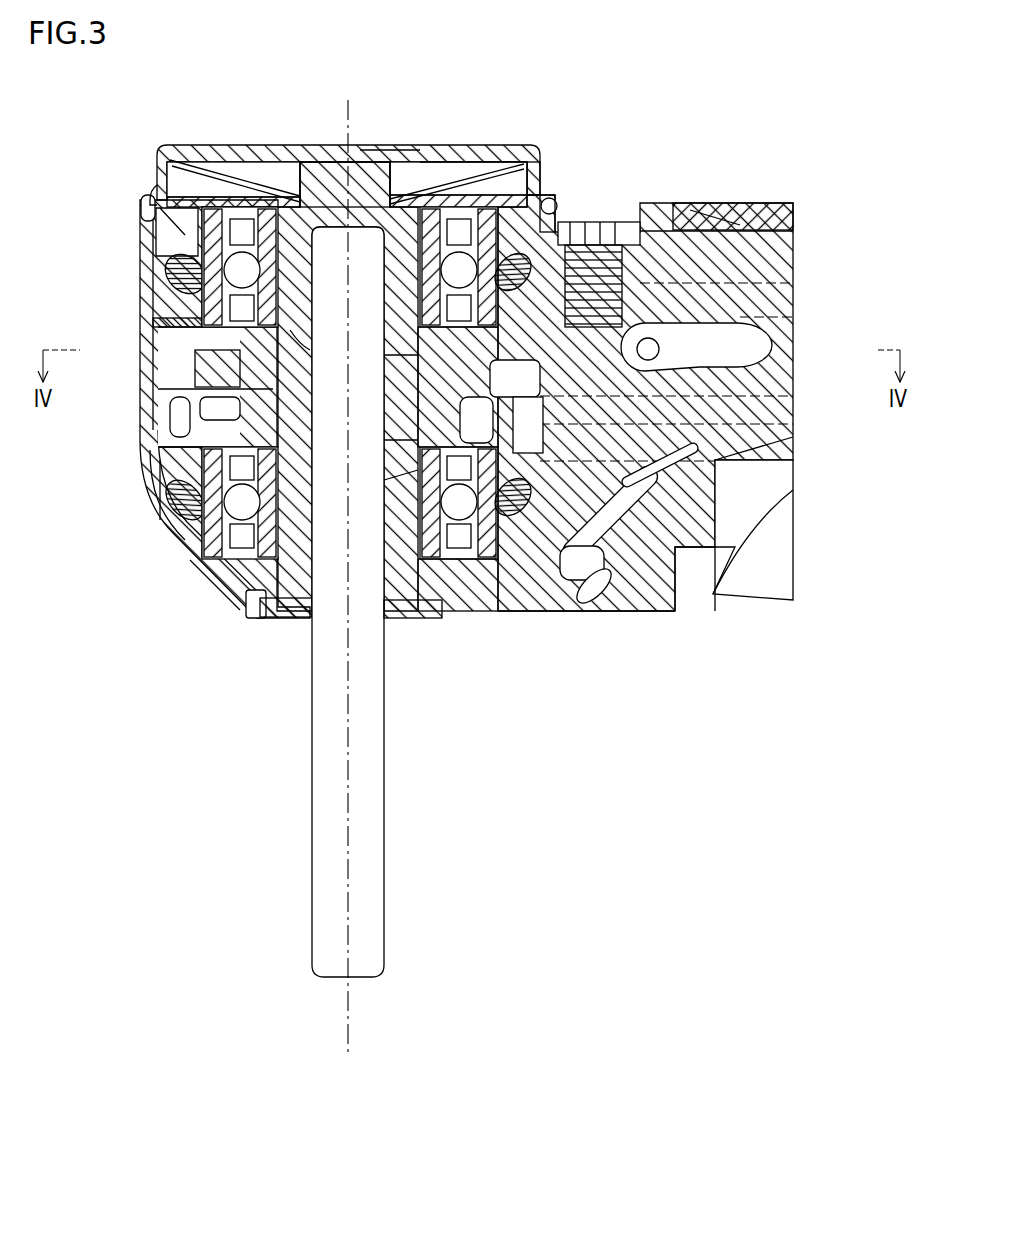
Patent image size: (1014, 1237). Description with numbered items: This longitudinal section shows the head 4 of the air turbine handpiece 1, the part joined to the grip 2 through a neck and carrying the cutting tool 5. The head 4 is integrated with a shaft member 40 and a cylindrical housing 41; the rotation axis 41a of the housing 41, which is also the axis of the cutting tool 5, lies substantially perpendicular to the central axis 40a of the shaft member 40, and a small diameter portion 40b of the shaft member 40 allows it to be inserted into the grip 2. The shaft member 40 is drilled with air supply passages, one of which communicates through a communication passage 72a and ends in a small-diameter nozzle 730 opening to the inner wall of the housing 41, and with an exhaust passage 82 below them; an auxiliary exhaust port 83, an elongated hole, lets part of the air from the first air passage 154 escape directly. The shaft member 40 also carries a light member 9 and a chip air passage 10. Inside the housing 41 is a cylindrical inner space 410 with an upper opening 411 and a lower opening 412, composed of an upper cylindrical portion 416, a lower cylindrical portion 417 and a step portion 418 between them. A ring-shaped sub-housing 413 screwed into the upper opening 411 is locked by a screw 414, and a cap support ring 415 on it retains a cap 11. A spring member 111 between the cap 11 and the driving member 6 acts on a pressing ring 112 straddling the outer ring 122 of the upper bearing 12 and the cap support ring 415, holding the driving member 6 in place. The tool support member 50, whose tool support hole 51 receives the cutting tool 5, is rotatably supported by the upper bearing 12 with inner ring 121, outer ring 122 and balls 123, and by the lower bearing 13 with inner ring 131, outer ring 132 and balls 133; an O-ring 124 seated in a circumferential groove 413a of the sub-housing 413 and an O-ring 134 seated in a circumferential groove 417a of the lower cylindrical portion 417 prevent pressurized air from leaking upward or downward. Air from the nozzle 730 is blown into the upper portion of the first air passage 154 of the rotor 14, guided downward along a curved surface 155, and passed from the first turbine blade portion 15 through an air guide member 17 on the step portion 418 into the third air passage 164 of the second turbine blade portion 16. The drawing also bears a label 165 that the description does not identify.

The air turbine handpiece 1 is at (728, 190).
The grip 2 is at (760, 222).
The head 4 is at (162, 548).
The cutting tool 5 is at (372, 828).
The driving member 6 is at (537, 188).
The light member 9 is at (785, 566).
The chip air passage 10 is at (630, 613).
The cap 11 is at (445, 148).
The upper bearing 12 is at (270, 165).
The lower bearing 13 is at (160, 485).
The rotor 14 is at (175, 363).
The first turbine blade portion 15 is at (793, 457).
The second turbine blade portion 16 is at (690, 570).
The air guide member 17 is at (160, 444).
The shaft member 40 is at (770, 260).
The central axis 40a is at (793, 396).
The small diameter portion 40b is at (793, 231).
The cylindrical housing 41 is at (160, 345).
The rotation axis 41a is at (350, 1035).
The tool support member 50 is at (462, 612).
The tool support hole 51 is at (400, 620).
The communication passage 72a is at (772, 335).
The exhaust passage 82 is at (793, 413).
The auxiliary exhaust port 83 is at (384, 472).
The spring member 111 is at (505, 150).
The pressing ring 112 is at (225, 168).
The inner ring 121 is at (340, 160).
The outer ring 122 is at (155, 322).
The balls 123 is at (372, 155).
The O-ring 124 is at (553, 215).
The inner ring 131 is at (245, 602).
The outer ring 132 is at (162, 532).
The balls 133 is at (200, 568).
The O-ring 134 is at (170, 507).
The first air passage 154 is at (392, 358).
The curved surface 155 is at (735, 218).
The third air passage 164 is at (384, 465).
The groove 165 is at (298, 347).
The inner space 410 is at (170, 405).
The upper opening 411 is at (158, 250).
The lower opening 412 is at (302, 620).
The sub-housing 413 is at (140, 220).
The circumferential groove 413a is at (560, 232).
The screw 414 is at (600, 224).
The cap support ring 415 is at (157, 180).
The upper cylindrical portion 416 is at (168, 285).
The lower cylindrical portion 417 is at (500, 612).
The circumferential groove 417a is at (585, 592).
The step portion 418 is at (205, 410).
The nozzle 730 is at (745, 300).